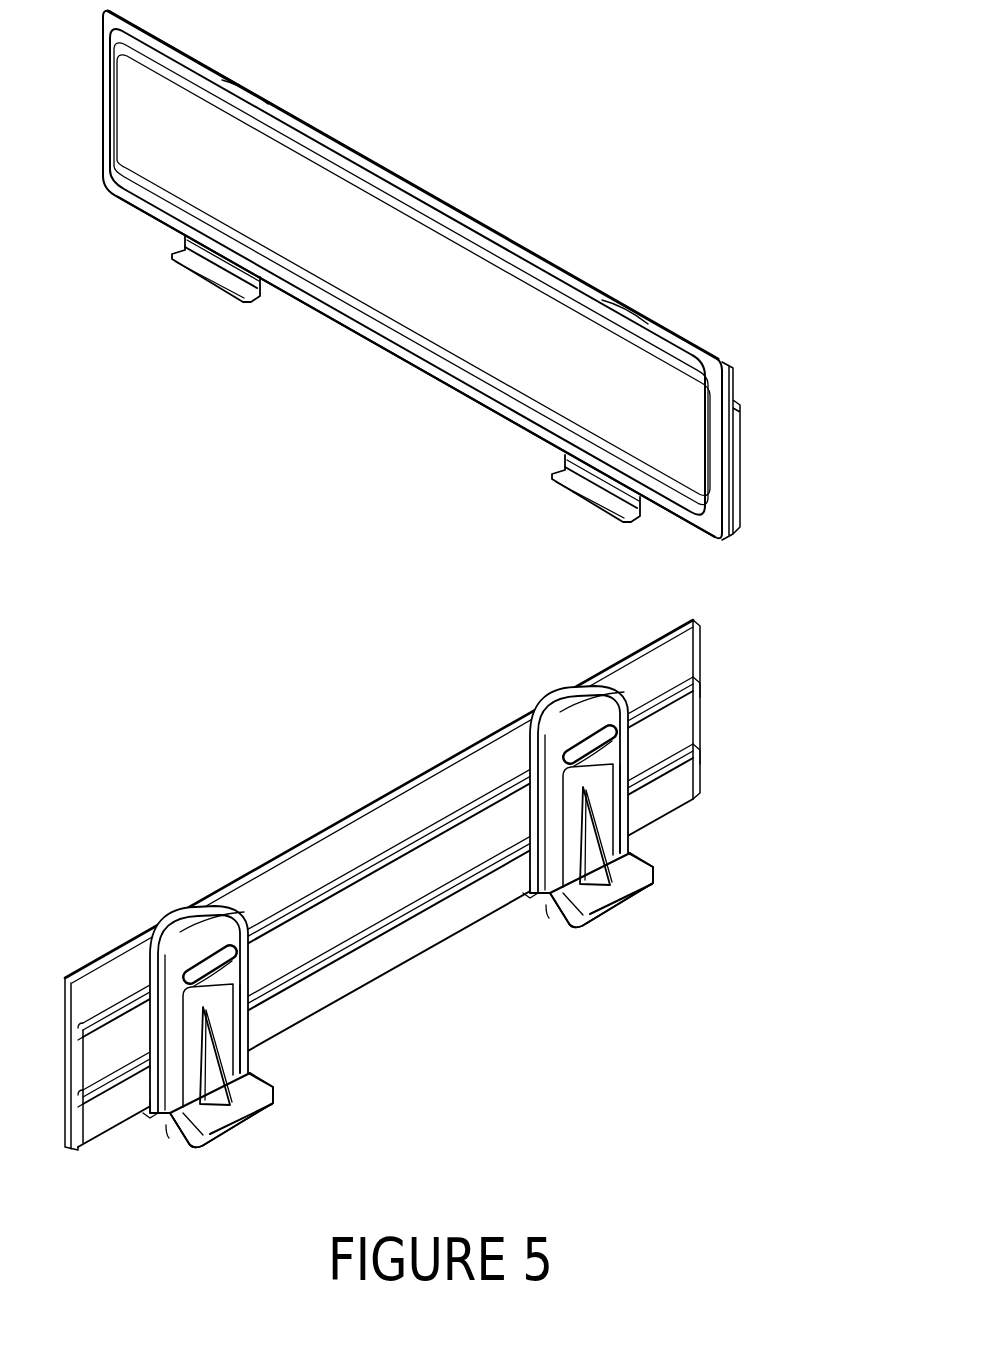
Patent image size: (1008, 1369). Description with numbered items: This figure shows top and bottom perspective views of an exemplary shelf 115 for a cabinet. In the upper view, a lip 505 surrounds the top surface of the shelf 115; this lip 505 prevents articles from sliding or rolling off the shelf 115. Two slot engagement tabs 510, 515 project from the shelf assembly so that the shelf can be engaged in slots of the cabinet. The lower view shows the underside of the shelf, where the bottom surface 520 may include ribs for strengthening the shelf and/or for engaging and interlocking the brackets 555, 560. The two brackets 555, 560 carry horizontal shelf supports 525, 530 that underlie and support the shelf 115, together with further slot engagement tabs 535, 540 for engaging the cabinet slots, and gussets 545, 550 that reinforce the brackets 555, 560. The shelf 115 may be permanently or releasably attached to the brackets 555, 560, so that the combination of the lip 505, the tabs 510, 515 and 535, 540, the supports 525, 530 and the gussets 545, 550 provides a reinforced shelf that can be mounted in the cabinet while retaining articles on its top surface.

The lip 505 is at (440, 224).
The shelf 115 is at (453, 333).
The slot engagement tab 515 is at (215, 270).
The slot engagement tab 510 is at (563, 493).
The bottom surface 520 is at (377, 817).
The horizontal shelf support 525 is at (513, 783).
The horizontal shelf support 530 is at (262, 930).
The slot engagement tab 535 is at (652, 890).
The slot engagement tab 540 is at (273, 1093).
The gusset 545 is at (593, 917).
The gusset 550 is at (205, 1137).
The bracket 555 is at (548, 915).
The bracket 560 is at (175, 1138).